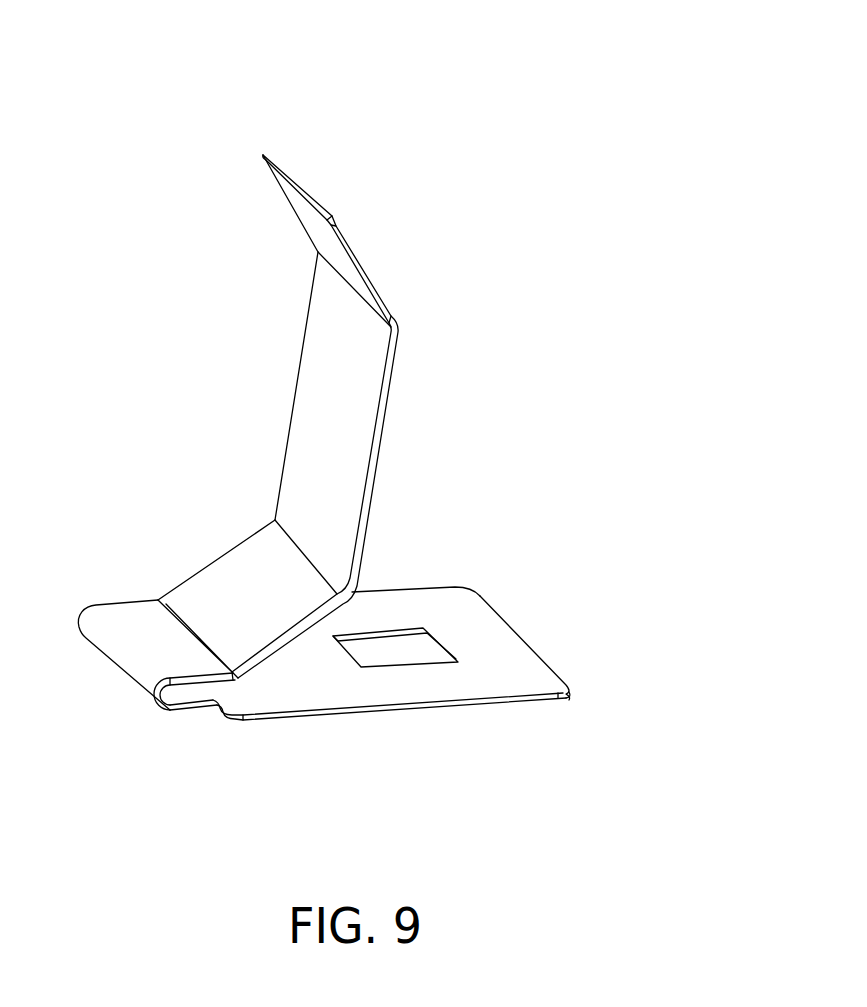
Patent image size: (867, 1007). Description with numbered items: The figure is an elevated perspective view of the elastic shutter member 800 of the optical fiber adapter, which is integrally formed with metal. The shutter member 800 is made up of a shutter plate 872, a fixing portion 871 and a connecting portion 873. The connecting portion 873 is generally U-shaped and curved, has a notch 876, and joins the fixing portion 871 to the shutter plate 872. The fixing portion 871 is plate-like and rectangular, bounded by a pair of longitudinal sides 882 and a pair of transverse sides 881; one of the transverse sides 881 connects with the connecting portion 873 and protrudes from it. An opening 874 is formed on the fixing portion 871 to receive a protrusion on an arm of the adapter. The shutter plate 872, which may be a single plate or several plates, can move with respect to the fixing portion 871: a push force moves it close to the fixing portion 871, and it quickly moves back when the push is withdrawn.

The shutter member 800 is at (492, 113).
The fixing portion 871 is at (523, 677).
The shutter plate 872 is at (320, 389).
The connecting portion 873 is at (134, 665).
The opening 874 is at (400, 648).
The notch 876 is at (186, 690).
The transverse sides 881 is at (548, 663).
The longitudinal sides 882 is at (403, 590).